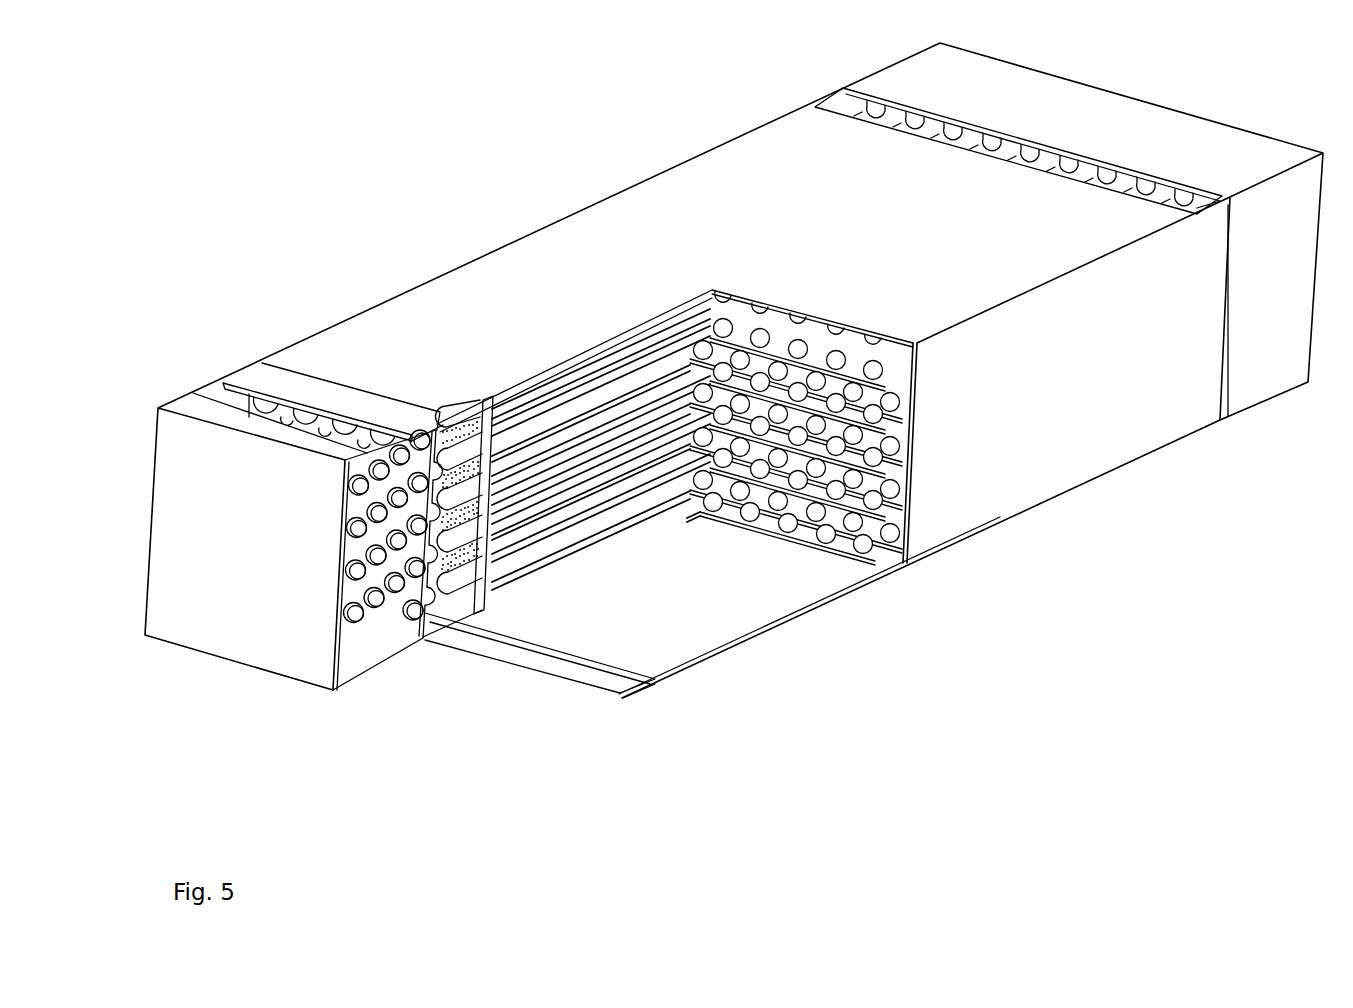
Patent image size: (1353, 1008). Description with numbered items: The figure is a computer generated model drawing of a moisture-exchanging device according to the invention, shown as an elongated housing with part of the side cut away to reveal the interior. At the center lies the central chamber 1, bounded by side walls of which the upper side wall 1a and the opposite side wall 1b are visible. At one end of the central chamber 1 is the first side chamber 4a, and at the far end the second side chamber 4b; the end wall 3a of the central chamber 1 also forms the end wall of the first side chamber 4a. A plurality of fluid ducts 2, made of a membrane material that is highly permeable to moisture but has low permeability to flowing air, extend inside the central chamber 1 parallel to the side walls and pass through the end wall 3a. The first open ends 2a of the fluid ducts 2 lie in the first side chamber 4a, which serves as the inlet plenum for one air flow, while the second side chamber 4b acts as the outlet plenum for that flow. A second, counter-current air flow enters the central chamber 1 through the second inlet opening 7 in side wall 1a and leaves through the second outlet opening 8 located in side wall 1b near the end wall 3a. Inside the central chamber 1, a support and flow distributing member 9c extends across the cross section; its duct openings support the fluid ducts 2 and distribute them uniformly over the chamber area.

The central chamber 1 is at (534, 228).
The side wall 1a is at (829, 238).
The side wall 1b is at (764, 623).
The fluid ducts 2 is at (830, 547).
The first open ends 2a is at (413, 624).
The end wall 3a is at (390, 612).
The first side chamber 4a is at (388, 560).
The second side chamber 4b is at (1250, 133).
The second inlet opening 7 is at (827, 90).
The second outlet opening 8 is at (595, 697).
The support and flow distributing member 9c is at (484, 568).